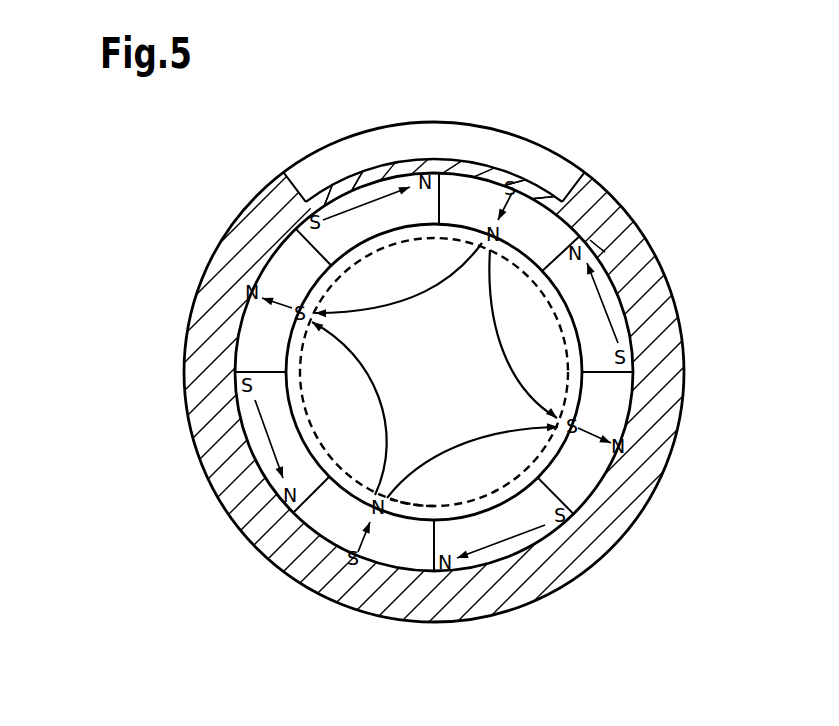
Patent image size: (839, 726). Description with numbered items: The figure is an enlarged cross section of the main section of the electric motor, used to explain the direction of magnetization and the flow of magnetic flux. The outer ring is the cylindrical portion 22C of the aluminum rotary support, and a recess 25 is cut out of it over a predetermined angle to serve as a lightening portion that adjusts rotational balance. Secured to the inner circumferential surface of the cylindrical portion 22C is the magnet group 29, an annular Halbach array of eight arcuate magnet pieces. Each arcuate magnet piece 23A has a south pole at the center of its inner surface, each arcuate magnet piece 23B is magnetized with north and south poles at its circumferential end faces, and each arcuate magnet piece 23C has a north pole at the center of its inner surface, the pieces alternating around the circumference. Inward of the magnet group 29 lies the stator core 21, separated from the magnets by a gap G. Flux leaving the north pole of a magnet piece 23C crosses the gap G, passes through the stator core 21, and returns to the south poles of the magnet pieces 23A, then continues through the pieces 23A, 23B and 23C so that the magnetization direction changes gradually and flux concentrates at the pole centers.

The stator core 21 is at (545, 460).
The cylindrical portion 22C is at (672, 392).
The arcuate magnet piece 23A is at (273, 272).
The arcuate magnet piece 23B is at (361, 196).
The arcuate magnet piece 23C is at (532, 214).
The recess 25 is at (471, 158).
The magnet group 29 is at (605, 252).
The gap G is at (412, 513).